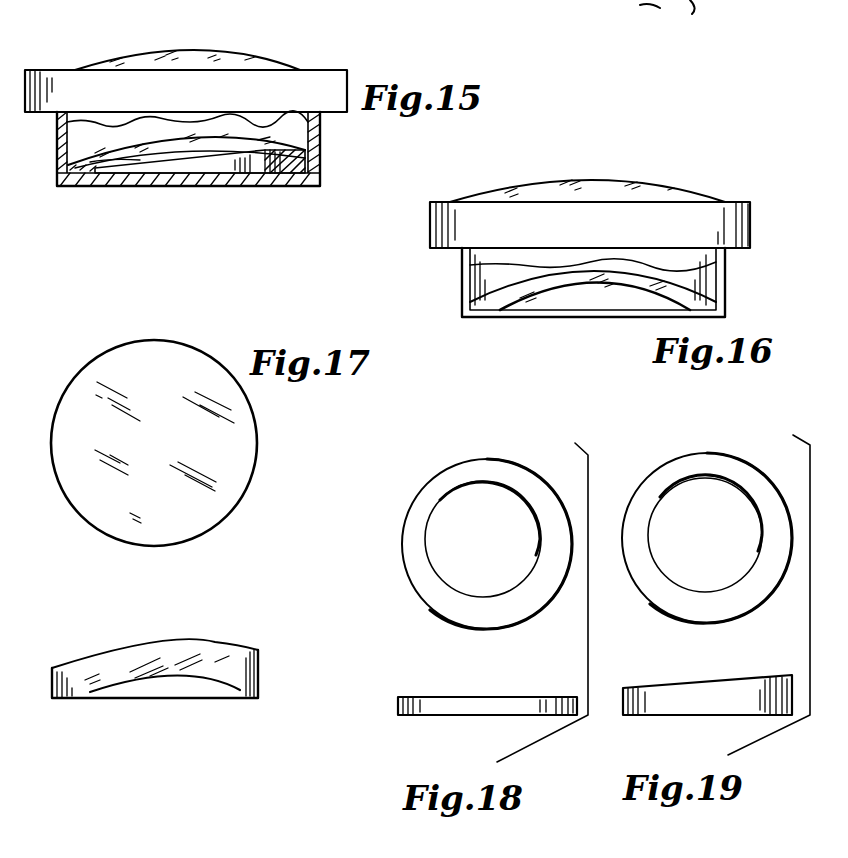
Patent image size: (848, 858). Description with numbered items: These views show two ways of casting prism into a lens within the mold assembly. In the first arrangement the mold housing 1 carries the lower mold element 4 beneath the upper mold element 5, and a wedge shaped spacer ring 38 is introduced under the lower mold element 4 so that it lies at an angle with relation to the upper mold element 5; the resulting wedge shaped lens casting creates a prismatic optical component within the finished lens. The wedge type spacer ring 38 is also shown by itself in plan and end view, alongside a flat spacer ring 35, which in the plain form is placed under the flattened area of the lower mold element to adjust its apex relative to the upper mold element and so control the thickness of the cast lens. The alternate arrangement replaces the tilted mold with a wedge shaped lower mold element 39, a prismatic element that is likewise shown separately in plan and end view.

In FIG. 15, the housing body 1 is at (220, 182).
In FIG. 15, the lower mold element 4 is at (118, 140).
In FIG. 15, the upper mold element 5 is at (190, 46).
In FIG. 18, the spacer ring 35 is at (425, 618).
In FIG. 15, the wedge shaped spacer ring 38 is at (308, 160).
In FIG. 19, the wedge shaped spacer ring 38 is at (646, 613).
In FIG. 16, the wedge shaped lower mold element 39 is at (604, 295).
In FIG. 17, the wedge shaped lower mold element 39 is at (202, 520).